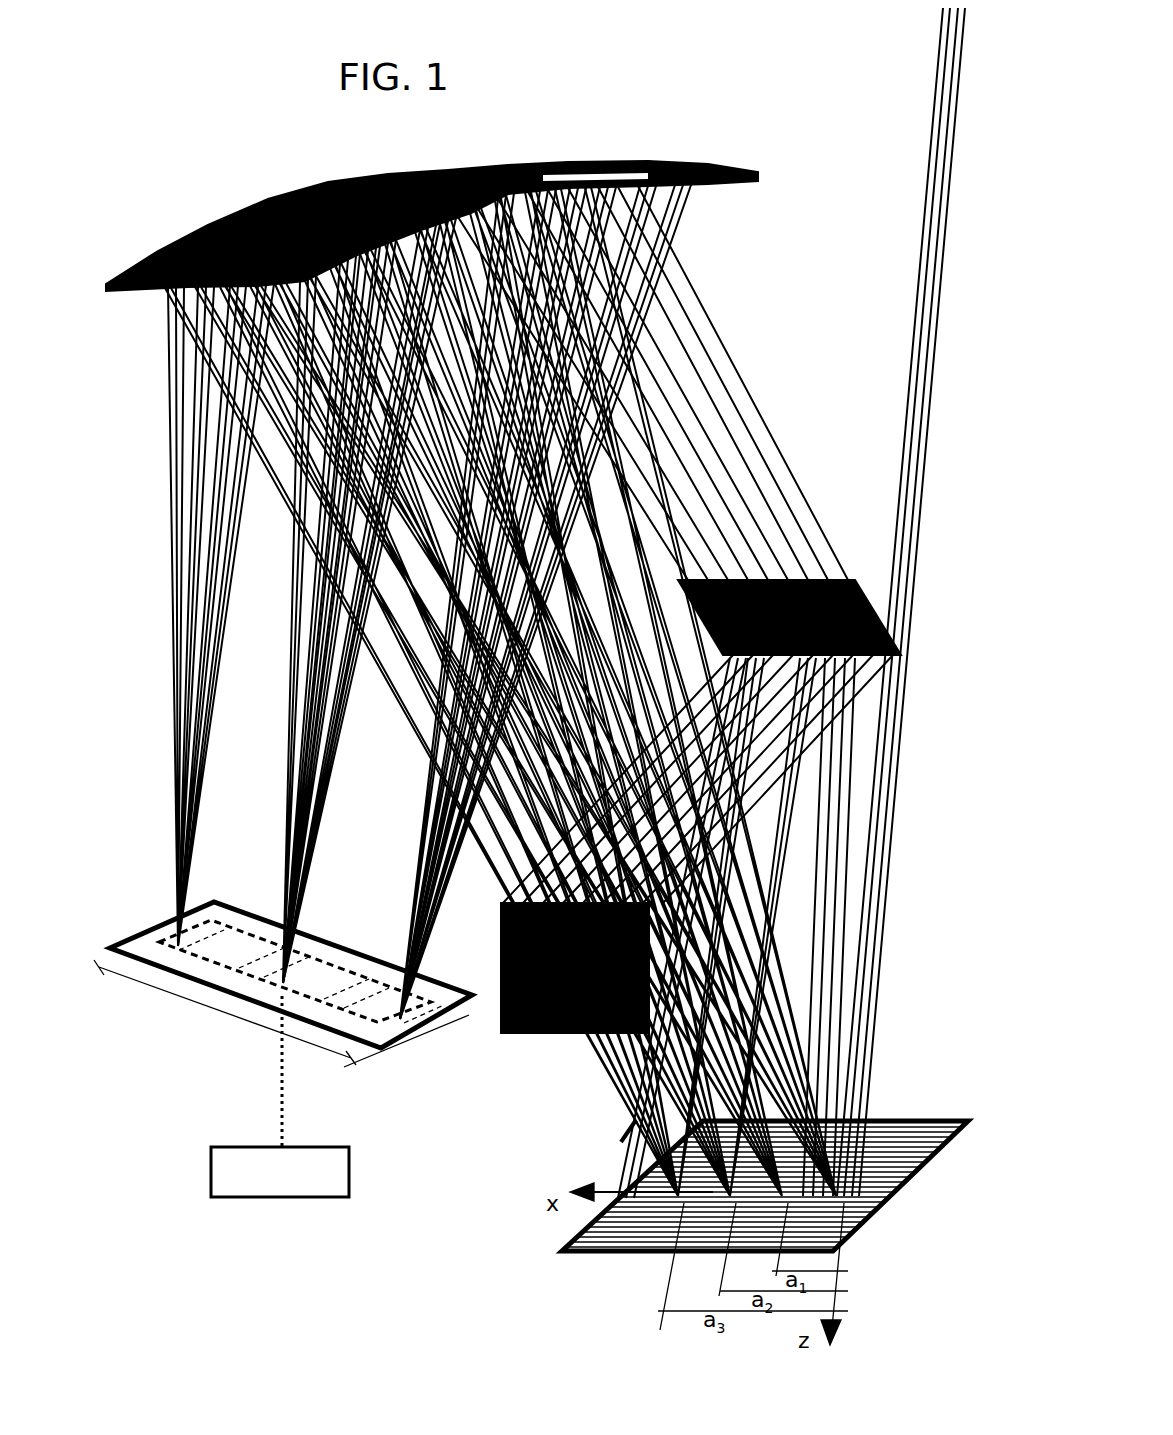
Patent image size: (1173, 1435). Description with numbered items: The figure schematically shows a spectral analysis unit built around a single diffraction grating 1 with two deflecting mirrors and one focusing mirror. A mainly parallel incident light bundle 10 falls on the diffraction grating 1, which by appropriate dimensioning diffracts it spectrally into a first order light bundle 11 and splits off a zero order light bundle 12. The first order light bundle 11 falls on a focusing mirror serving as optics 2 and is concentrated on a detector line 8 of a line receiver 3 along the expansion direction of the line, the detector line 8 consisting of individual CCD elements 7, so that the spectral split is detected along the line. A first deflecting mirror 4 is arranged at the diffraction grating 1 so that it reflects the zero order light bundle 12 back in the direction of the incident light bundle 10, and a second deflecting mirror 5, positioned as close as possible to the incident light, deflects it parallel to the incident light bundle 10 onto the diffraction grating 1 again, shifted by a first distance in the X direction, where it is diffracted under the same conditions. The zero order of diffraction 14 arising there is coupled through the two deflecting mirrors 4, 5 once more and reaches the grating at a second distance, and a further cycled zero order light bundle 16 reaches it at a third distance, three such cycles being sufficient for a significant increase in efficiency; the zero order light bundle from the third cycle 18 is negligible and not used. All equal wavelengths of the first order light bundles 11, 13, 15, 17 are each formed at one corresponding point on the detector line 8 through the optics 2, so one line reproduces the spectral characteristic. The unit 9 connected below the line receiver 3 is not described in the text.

The diffraction grating 1 is at (552, 1243).
The optics 2 is at (588, 160).
The line receiver 3 is at (403, 1028).
The first deflecting mirror 4 is at (535, 1038).
The second deflecting mirror 5 is at (780, 572).
The CCD elements 7 is at (233, 955).
The detector line 8 is at (158, 952).
The evaluation unit 9 is at (280, 1096).
The incident light bundle 10 is at (891, 340).
The first order light bundle 11 is at (210, 660).
The zero order light bundle 12 is at (852, 713).
The first order light bundle 13 is at (205, 612).
The zero order of diffraction 14 is at (802, 765).
The first order light bundle 15 is at (190, 558).
The zero order light bundle 16 is at (742, 905).
The first order light bundle 17 is at (150, 506).
The zero order light bundle from the third cycle 18 is at (598, 1138).